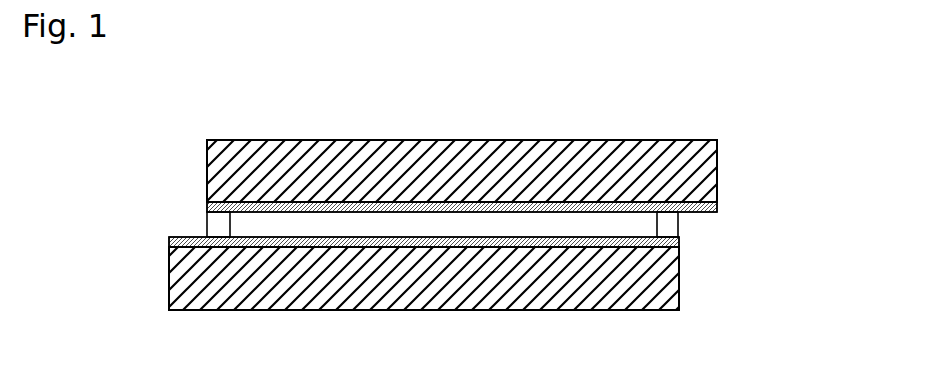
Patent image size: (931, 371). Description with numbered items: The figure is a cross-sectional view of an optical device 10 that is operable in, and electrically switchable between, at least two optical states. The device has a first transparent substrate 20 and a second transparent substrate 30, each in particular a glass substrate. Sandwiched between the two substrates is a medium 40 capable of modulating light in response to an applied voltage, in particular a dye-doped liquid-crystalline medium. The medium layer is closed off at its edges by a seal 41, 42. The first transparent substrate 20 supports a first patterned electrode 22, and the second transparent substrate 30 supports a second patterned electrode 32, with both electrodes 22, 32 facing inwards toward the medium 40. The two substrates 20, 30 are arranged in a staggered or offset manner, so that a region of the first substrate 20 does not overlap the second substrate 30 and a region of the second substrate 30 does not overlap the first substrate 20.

The optical device 10 is at (352, 132).
The first transparent substrate 20 is at (222, 170).
The first patterned electrode 22 is at (712, 209).
The second transparent substrate 30 is at (679, 277).
The second patterned electrode 32 is at (177, 242).
The medium 40 is at (517, 227).
The seal 41 is at (217, 227).
The seal 42 is at (667, 224).